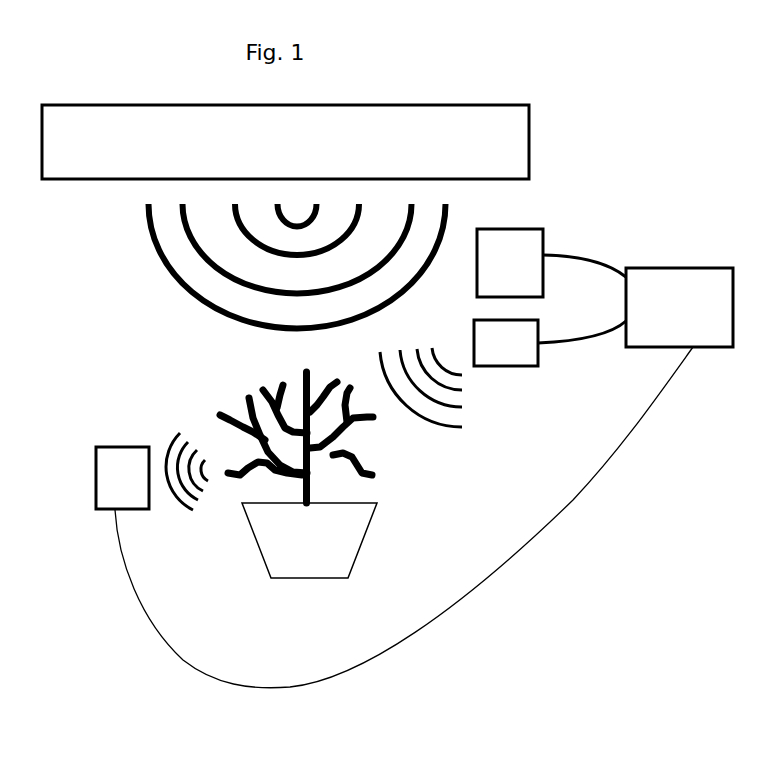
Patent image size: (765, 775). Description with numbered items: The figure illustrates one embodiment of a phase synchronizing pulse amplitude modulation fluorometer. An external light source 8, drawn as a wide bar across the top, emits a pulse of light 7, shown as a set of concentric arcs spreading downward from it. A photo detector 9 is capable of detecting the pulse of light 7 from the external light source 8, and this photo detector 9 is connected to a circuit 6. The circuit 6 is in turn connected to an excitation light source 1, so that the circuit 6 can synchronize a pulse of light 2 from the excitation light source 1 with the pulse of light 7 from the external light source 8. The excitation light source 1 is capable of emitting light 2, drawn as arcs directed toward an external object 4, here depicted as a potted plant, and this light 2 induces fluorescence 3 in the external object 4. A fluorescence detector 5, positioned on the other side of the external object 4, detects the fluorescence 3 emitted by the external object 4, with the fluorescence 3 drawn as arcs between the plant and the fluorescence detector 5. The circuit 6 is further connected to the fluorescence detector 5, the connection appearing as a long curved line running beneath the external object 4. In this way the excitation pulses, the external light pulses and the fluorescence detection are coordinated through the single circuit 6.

The external light source 8 is at (285, 142).
The pulse of light 7 is at (175, 285).
The photo detector 9 is at (510, 263).
The excitation light source 1 is at (506, 343).
The circuit 6 is at (679, 307).
The fluorescence detector 5 is at (122, 478).
The external object 4 is at (309, 540).
The light 2 is at (440, 425).
The fluorescence 3 is at (180, 505).